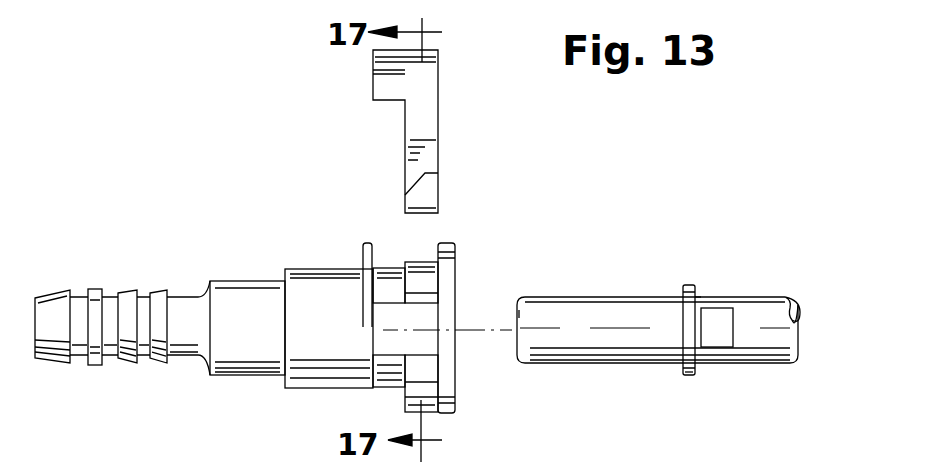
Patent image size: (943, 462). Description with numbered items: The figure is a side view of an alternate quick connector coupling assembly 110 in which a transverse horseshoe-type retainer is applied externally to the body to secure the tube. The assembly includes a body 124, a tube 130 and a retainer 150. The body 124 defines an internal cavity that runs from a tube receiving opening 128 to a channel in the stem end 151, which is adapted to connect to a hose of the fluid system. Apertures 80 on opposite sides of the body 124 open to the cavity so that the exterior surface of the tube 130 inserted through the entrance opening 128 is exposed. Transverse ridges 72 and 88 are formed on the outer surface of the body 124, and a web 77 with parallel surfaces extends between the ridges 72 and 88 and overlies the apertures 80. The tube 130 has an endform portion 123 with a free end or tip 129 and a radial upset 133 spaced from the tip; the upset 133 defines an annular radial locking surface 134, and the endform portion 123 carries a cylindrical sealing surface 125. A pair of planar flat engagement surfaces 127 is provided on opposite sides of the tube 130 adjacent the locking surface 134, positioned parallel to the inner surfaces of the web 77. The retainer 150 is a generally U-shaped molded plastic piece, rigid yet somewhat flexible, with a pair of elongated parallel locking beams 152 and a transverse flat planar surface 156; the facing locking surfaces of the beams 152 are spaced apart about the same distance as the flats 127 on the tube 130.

The quick connector coupling assembly 110 is at (320, 168).
The stem end 151 is at (55, 360).
The body 124 is at (243, 271).
The transverse ridge 88 is at (363, 252).
The web 77 is at (388, 330).
The transverse ridge 72 is at (455, 250).
The apertures 80 is at (430, 298).
The tube receiving opening 128 is at (468, 338).
The retainer 150 is at (445, 94).
The transverse flat planar surface 156 is at (438, 120).
The locking beams 152 is at (427, 190).
The tube 130 is at (739, 292).
The tip 129 is at (517, 318).
The cylindrical sealing surface 125 is at (632, 363).
The radial upset 133 is at (688, 285).
The annular radial locking surface 134 is at (697, 297).
The endform portion 123 is at (690, 382).
The planar flat engagement surfaces 127 is at (722, 340).